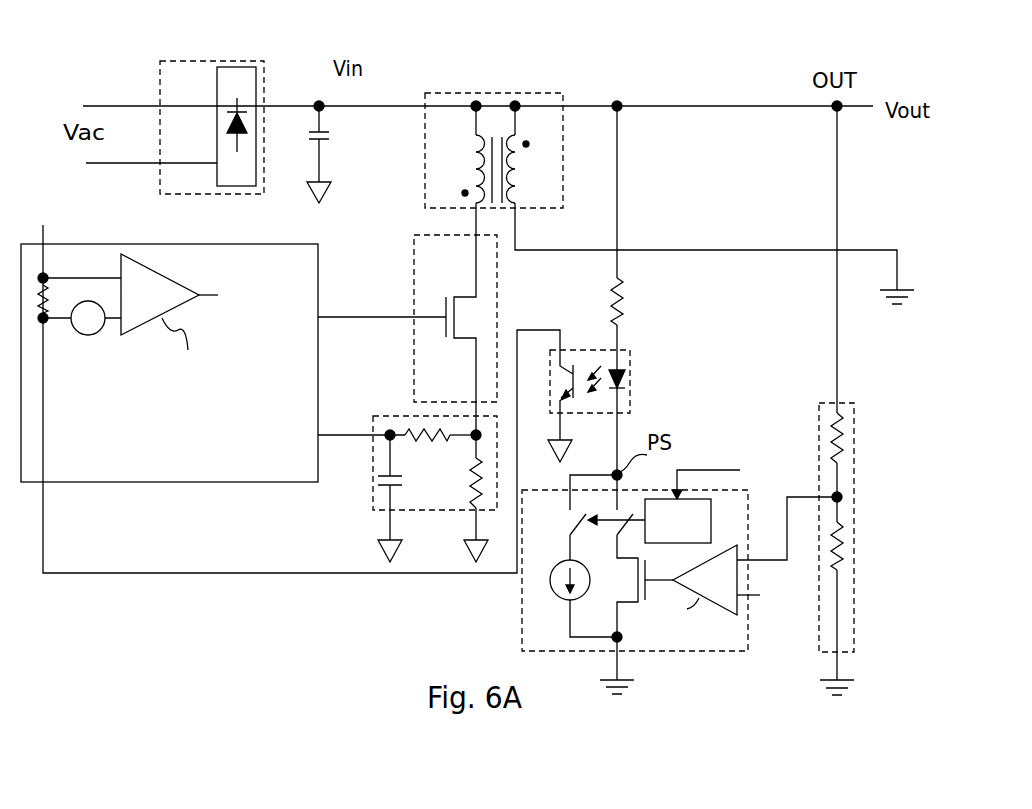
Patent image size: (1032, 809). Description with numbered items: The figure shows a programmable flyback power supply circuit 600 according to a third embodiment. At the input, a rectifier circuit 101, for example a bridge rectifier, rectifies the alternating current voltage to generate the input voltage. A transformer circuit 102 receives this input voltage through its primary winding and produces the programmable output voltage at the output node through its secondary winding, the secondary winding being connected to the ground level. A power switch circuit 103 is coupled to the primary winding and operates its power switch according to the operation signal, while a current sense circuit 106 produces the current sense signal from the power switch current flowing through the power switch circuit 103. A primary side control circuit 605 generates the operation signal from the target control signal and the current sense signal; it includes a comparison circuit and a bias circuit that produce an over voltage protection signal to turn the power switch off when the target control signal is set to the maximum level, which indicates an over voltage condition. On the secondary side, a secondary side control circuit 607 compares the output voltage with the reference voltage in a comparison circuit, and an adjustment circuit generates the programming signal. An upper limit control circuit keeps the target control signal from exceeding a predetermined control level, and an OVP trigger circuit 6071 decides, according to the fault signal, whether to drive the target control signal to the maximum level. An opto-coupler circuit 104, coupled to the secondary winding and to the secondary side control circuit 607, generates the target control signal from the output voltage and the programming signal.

The programmable flyback power supply circuit 600 is at (856, 47).
The rectifier circuit 101 is at (195, 189).
The transformer circuit 102 is at (505, 93).
The power switch circuit 103 is at (457, 268).
The opto-coupler circuit 104 is at (630, 386).
The current sense circuit 106 is at (412, 416).
The primary side control circuit 605 is at (307, 475).
The secondary side control circuit 607 is at (679, 589).
The OVP trigger circuit 6071 is at (678, 521).